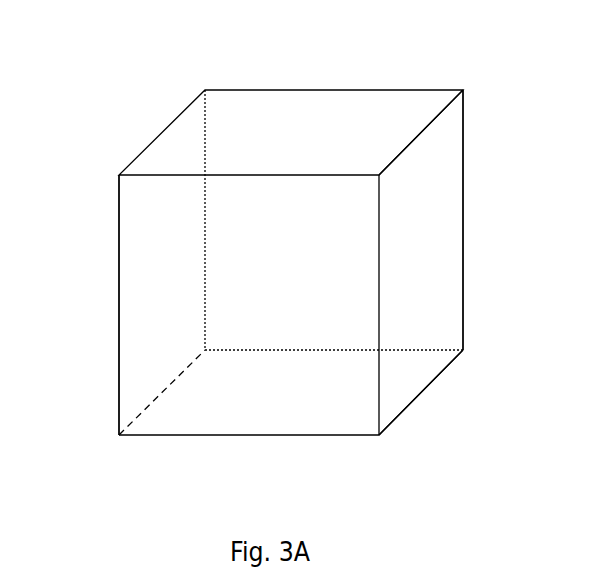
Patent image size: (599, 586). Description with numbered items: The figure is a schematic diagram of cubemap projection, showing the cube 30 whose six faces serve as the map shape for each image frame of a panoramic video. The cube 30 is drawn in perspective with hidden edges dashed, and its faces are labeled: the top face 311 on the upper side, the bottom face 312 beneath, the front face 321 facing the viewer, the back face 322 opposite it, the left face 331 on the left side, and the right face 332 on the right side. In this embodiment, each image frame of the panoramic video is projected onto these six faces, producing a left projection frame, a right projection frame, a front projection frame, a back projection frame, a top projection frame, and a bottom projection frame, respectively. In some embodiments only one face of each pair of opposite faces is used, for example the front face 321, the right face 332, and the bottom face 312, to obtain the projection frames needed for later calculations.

The cube 30 is at (458, 59).
The top face 311 is at (294, 112).
The bottom face 312 is at (228, 415).
The front face 321 is at (244, 323).
The back face 322 is at (437, 216).
The left face 331 is at (147, 263).
The right face 332 is at (437, 291).